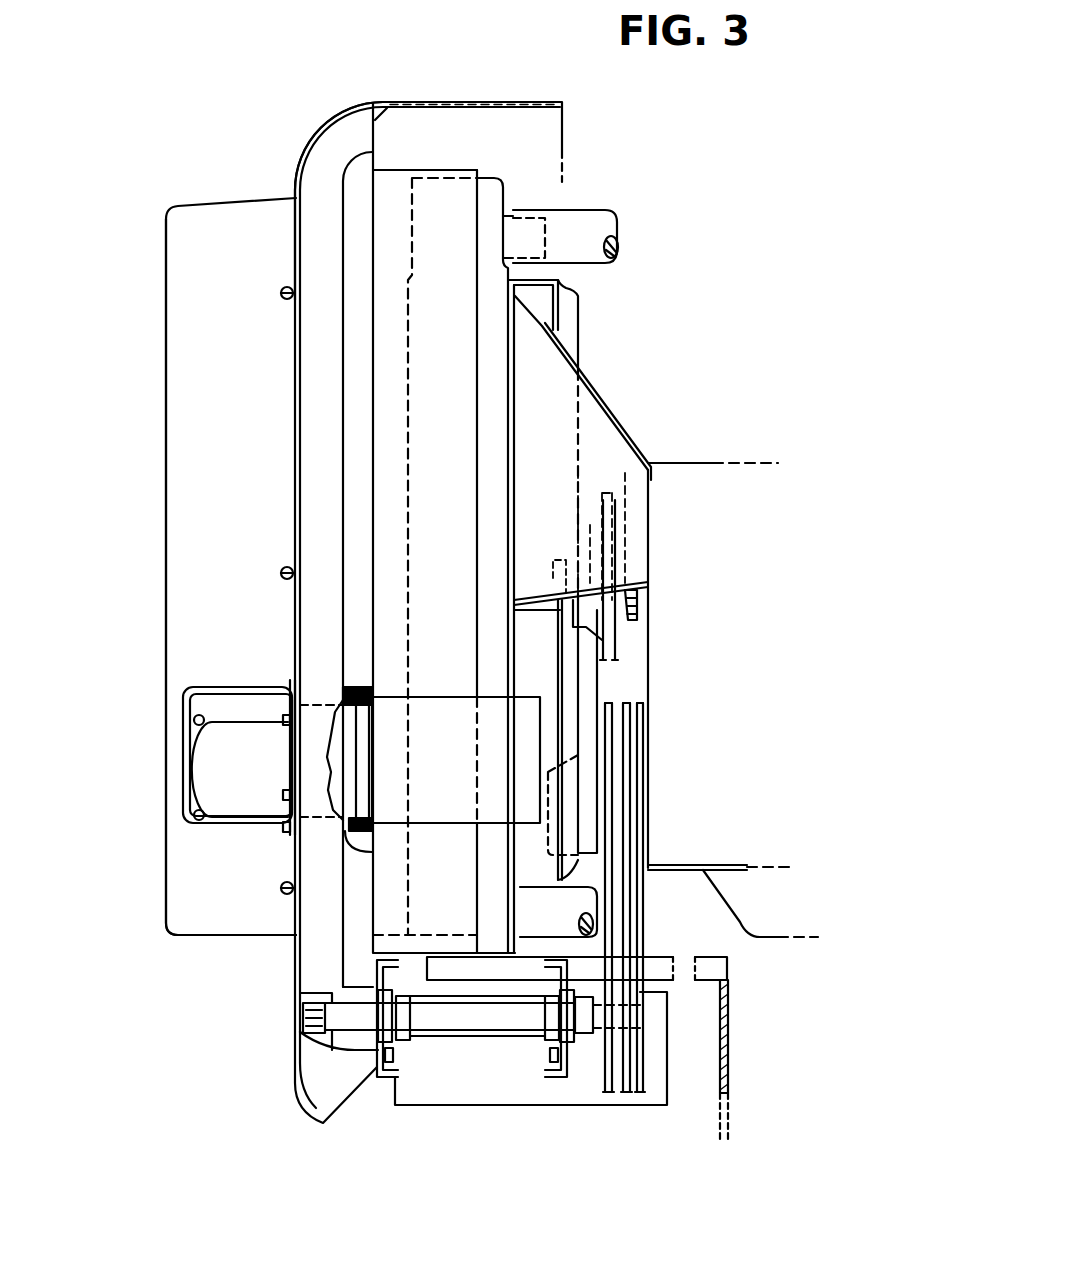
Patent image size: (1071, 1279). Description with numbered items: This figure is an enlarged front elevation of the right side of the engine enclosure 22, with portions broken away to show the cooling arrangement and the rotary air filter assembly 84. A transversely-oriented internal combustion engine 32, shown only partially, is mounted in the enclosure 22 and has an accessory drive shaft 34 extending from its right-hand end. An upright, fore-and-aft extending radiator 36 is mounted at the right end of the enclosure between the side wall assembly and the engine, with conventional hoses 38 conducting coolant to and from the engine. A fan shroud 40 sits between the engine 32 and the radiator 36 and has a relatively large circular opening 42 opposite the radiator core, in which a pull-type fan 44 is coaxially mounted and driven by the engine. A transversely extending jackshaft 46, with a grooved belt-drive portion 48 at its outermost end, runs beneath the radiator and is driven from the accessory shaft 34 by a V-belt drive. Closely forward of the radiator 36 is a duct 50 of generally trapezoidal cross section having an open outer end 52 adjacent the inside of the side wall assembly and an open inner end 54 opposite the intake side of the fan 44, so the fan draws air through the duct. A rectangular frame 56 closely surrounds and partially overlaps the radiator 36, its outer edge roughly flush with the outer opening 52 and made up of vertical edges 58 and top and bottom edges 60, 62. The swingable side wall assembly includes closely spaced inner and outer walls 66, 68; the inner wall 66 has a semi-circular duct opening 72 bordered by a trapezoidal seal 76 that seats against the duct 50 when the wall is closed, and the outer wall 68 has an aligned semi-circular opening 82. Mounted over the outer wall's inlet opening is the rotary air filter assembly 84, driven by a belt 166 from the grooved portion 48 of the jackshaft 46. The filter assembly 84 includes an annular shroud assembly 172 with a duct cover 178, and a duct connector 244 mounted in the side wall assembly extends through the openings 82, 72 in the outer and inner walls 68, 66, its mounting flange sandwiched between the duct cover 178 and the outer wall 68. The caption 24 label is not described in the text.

The enclosure 22 is at (300, 93).
The top plate 24 is at (477, 101).
The internal combustion engine 32 is at (703, 478).
The accessory drive shaft 34 is at (550, 575).
The radiator 36 is at (498, 178).
The hoses 38 is at (585, 218).
The fan shroud 40 is at (601, 280).
The circular opening 42 is at (578, 329).
The fan 44 is at (592, 775).
The jackshaft 46 is at (506, 1016).
The grooved belt-drive portion 48 is at (297, 1022).
The duct 50 is at (436, 696).
The open outer end 52 is at (372, 783).
The open inner end 54 is at (548, 726).
The rectangular frame 56 is at (433, 154).
The vertical edges 58 is at (376, 424).
The top edge 60 is at (376, 168).
The bottom edge 62 is at (382, 931).
The inner wall 66 is at (343, 366).
The outer wall 68 is at (295, 350).
The semi-circular duct opening 72 is at (343, 690).
The trapezoidal seal 76 is at (373, 685).
The semi-circular opening 82 is at (300, 704).
The rotary air filter assembly 84 is at (147, 176).
The belt 166 is at (303, 1000).
The annular shroud assembly 172 is at (141, 331).
The duct cover 178 is at (213, 760).
The duct connector 244 is at (340, 820).